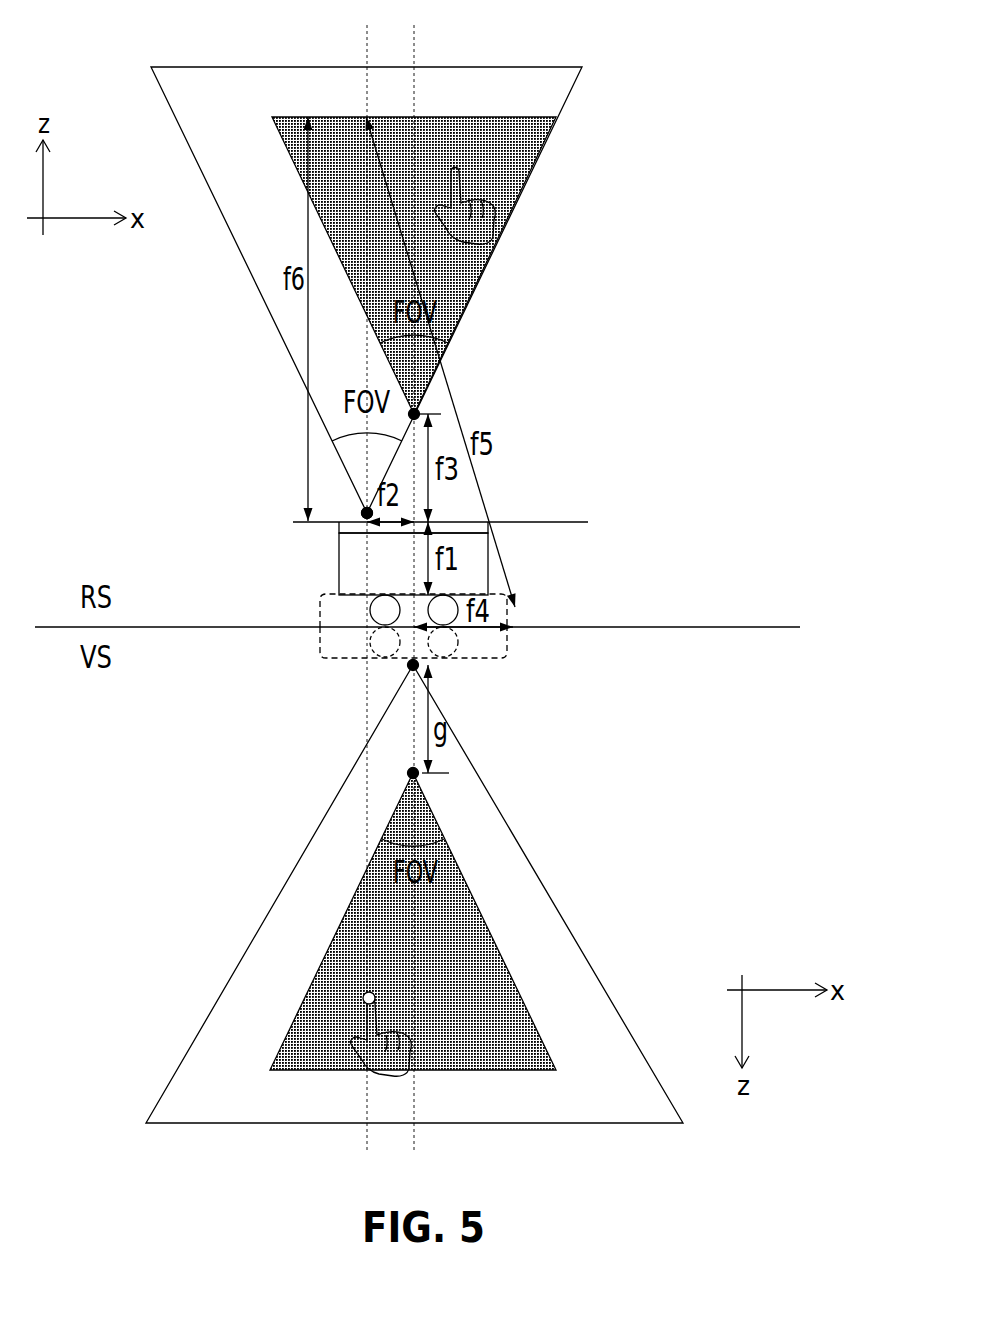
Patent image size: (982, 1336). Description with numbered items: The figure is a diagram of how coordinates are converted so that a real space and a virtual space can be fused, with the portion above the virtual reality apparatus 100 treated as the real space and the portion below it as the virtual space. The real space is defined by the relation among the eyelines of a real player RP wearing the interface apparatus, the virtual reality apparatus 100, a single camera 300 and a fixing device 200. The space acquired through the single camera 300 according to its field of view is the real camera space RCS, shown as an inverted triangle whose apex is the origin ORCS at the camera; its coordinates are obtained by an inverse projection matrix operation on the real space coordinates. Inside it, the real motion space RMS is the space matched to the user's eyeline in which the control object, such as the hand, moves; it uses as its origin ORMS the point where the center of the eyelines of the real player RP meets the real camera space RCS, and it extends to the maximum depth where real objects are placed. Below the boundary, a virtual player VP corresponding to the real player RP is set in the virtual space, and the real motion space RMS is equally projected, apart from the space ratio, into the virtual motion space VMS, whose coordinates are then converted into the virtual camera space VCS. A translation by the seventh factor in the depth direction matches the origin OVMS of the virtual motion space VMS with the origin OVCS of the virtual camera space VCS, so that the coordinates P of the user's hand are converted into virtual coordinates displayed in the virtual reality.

The virtual reality apparatus 100 is at (340, 528).
The fixing device 200 is at (340, 563).
The single camera 300 is at (362, 512).
The real camera space RCS is at (366, 290).
The real motion space RMS is at (414, 265).
The virtual camera space VCS is at (414, 894).
The virtual motion space VMS is at (413, 922).
The coordinates of a control object P is at (495, 206).
The origin of the real camera space ORCS is at (360, 508).
The origin of the real motion space ORMS is at (418, 412).
The origin of the virtual camera space OVCS is at (410, 667).
The origin of the virtual motion space OVMS is at (417, 774).
The real player RP is at (515, 607).
The virtual player VP is at (508, 645).